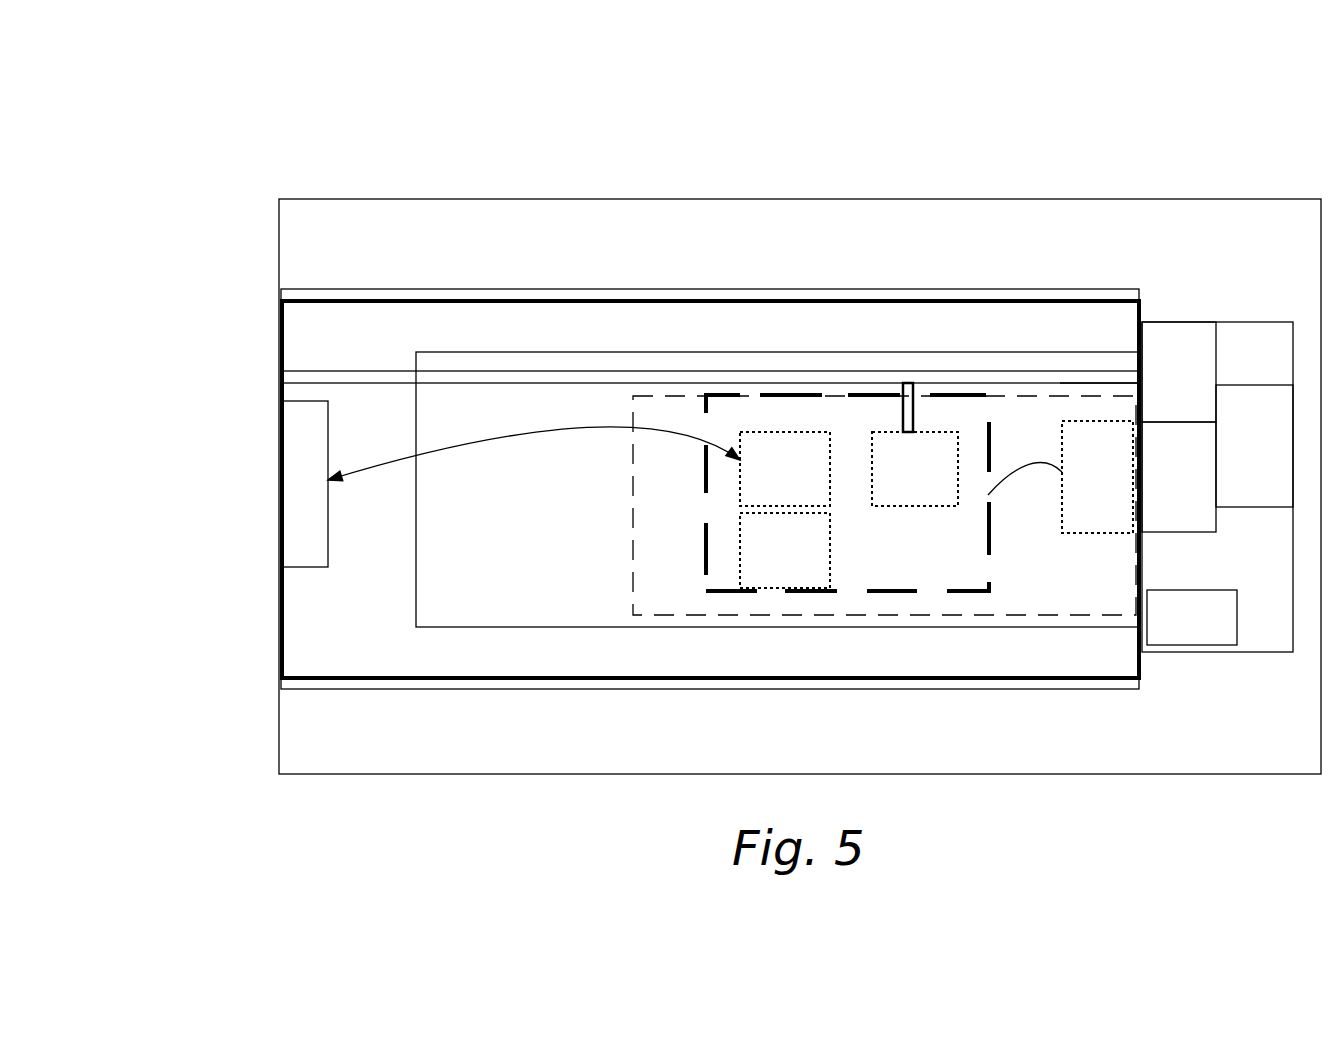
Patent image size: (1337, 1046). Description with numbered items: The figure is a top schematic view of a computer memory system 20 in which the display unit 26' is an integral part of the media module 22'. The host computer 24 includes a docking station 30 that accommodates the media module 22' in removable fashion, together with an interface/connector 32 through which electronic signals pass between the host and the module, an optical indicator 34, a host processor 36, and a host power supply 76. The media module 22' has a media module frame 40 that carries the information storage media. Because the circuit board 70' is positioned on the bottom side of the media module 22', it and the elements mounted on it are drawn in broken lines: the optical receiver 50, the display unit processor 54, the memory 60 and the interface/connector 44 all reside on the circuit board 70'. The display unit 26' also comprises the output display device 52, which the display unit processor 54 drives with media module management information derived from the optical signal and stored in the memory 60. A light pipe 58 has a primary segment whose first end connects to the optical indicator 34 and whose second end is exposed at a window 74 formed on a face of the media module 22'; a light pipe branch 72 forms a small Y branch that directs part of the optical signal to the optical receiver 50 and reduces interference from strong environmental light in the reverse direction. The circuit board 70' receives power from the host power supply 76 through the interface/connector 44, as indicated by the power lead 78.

The computer memory system 20 is at (948, 147).
The host computer 24 is at (1110, 199).
The docking station 30 is at (1014, 289).
The media module 22' is at (710, 449).
The media module frame 40 is at (862, 340).
The window 74 is at (281, 377).
The light pipe 58 is at (1078, 381).
The output display device 52 is at (283, 488).
The circuit board 70' is at (840, 505).
The display unit 26' is at (821, 493).
The display unit processor 54 is at (830, 462).
The memory 60 is at (830, 552).
The optical receiver 50 is at (868, 452).
The light pipe branch 72 is at (913, 420).
The interface/connector 44 is at (1100, 533).
The power lead 78 is at (1030, 473).
The optical indicator 34 is at (1175, 322).
The host processor 36 is at (1237, 385).
The interface/connector 32 is at (1167, 533).
The host power supply 76 is at (1237, 618).